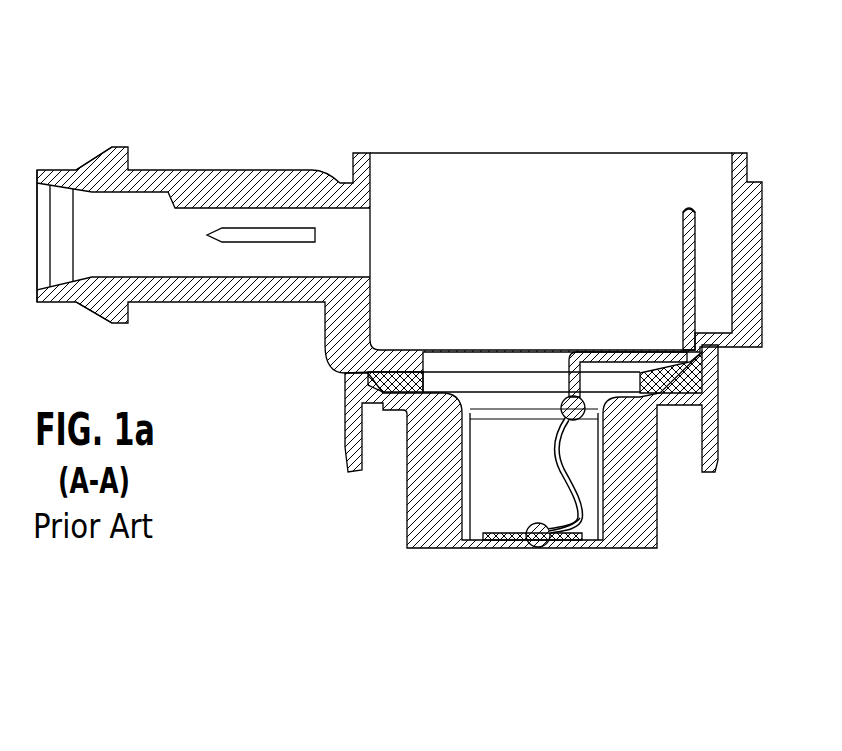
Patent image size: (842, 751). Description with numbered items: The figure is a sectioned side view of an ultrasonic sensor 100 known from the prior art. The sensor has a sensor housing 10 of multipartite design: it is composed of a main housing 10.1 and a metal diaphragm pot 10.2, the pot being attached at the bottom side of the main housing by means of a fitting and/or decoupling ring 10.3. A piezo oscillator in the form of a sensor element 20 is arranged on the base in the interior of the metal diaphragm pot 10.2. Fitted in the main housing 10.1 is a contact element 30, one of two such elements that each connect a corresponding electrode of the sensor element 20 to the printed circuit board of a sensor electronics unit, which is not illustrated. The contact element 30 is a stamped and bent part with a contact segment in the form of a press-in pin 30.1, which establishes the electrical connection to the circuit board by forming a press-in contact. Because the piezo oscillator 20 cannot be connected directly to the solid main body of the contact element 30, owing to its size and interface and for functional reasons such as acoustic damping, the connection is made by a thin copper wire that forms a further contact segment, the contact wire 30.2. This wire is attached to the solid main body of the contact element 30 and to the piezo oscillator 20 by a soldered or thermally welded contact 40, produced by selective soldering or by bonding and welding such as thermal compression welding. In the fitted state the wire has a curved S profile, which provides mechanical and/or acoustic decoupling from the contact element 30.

The ultrasonic sensor 100 is at (600, 84).
The sensor housing 10 is at (292, 161).
The main housing 10.1 is at (215, 190).
The metal diaphragm pot 10.2 is at (433, 507).
The fitting and/or decoupling ring 10.3 is at (375, 378).
The sensor element 20 is at (572, 543).
The contact element 30 is at (673, 292).
The press-in pin 30.1 is at (697, 250).
The contact wire 30.2 is at (563, 484).
The soldered or thermally welded contact 40 is at (563, 401).